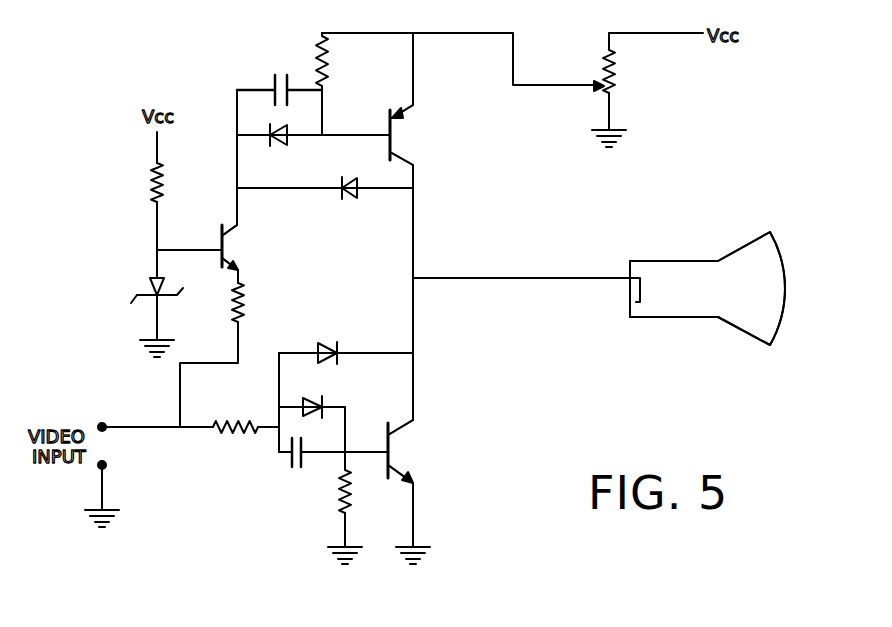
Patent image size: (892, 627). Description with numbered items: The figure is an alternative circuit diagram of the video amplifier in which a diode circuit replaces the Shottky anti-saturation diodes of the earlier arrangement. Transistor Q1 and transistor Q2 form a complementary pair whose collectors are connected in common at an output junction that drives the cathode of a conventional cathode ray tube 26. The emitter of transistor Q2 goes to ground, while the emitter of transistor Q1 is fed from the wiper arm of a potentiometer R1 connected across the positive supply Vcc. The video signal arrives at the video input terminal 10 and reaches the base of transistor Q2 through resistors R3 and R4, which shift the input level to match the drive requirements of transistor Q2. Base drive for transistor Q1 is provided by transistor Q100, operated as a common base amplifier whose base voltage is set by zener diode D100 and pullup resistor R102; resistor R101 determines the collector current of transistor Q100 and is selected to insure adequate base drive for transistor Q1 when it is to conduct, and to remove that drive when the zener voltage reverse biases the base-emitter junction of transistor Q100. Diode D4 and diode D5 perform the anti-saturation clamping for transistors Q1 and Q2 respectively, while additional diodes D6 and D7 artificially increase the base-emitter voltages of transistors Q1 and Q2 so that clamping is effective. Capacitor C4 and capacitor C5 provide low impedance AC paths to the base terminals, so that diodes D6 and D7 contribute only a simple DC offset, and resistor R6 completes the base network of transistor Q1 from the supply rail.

The capacitor C4 is at (274, 83).
The resistor R6 is at (337, 61).
The transistor Q1 is at (414, 135).
The diode D6 is at (283, 140).
The diode D4 is at (352, 196).
The potentiometer R1 is at (614, 77).
The pullup resistor R102 is at (163, 197).
The transistor Q100 is at (256, 247).
The zener diode D100 is at (140, 292).
The resistor R101 is at (246, 297).
The video input terminal 10 is at (127, 425).
The resistor R3 is at (240, 436).
The diode D5 is at (326, 346).
The diode D7 is at (321, 402).
The capacitor C5 is at (290, 462).
The resistor R4 is at (352, 490).
The transistor Q2 is at (416, 451).
The cathode ray tube 26 is at (683, 312).